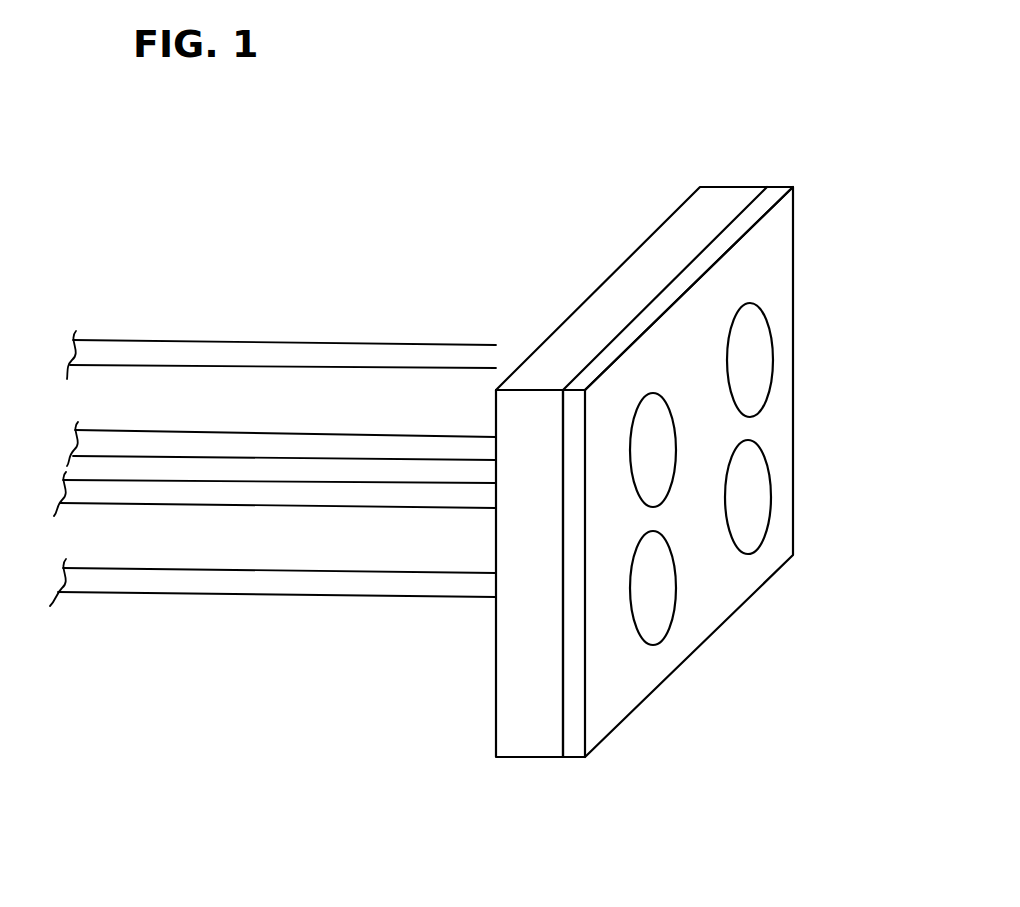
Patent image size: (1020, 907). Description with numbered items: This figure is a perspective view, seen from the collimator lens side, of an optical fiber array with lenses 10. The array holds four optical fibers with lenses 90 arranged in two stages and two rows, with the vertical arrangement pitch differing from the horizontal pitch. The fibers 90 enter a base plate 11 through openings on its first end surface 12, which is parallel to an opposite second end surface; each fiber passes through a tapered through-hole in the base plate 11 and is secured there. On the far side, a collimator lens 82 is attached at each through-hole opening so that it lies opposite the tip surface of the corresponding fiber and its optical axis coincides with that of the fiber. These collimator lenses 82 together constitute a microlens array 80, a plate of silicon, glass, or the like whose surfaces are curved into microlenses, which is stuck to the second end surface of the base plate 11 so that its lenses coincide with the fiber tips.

The optical fiber array with lenses 10 is at (359, 231).
The base plate 11 is at (663, 243).
The first end surface 12 is at (573, 311).
The microlens array 80 is at (765, 245).
The collimator lens 82 is at (760, 345).
The optical fiber with lens 90 is at (343, 580).